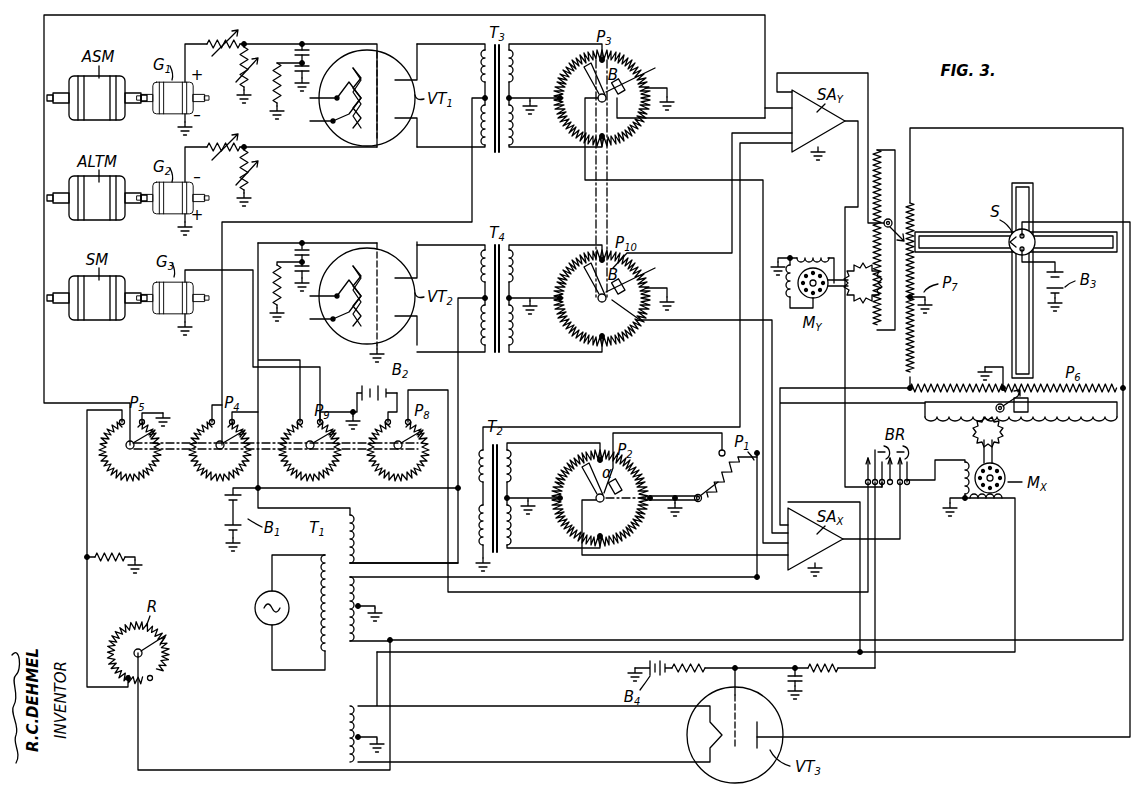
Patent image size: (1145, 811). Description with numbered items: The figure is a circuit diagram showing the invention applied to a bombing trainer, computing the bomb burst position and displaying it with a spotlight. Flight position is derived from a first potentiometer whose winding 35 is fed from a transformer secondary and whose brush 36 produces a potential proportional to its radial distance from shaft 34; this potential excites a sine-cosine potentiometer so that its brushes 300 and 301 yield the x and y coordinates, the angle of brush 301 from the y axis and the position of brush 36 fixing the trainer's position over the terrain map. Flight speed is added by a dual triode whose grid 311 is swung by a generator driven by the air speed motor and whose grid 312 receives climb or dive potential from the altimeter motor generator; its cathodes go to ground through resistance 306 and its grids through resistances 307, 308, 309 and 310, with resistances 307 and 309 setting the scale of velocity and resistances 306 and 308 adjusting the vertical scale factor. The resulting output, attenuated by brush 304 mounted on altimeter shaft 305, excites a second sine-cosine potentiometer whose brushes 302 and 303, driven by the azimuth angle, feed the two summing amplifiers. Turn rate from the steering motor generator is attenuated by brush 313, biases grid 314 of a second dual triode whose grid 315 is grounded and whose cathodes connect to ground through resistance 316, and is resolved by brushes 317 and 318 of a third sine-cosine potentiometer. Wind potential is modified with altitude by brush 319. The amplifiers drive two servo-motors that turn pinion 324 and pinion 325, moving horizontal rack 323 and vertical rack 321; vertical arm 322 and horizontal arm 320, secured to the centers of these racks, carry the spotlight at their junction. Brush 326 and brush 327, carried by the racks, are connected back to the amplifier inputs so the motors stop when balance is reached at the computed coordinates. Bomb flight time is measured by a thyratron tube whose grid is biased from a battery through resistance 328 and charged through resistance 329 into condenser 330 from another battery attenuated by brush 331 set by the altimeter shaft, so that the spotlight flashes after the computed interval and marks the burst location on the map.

The brush 300 is at (580, 477).
The brush 301 is at (597, 502).
The brush 302 is at (580, 77).
The brush 303 is at (656, 80).
The brush 304 is at (223, 460).
The shaft 305 is at (337, 456).
The resistance 306 is at (274, 104).
The resistance 307 is at (238, 70).
The resistance 308 is at (254, 178).
The resistance 309 is at (217, 35).
The resistance 310 is at (209, 144).
The grid 311 is at (382, 56).
The grid 312 is at (383, 142).
The brush 313 is at (323, 450).
The grid 314 is at (382, 260).
The grid 315 is at (354, 335).
The resistance 316 is at (287, 308).
The brush 317 is at (577, 278).
The cosine brush 318 is at (658, 278).
The brush 319 is at (132, 460).
The horizontal arm 320 is at (946, 232).
The vertical rack 321 is at (878, 148).
The vertical arm 322 is at (1030, 356).
The horizontal rack 323 is at (1106, 418).
The pinion 324 is at (1000, 444).
The pinion 325 is at (868, 304).
The brush 326 is at (1024, 414).
The brush 327 is at (890, 238).
The resistance 328 is at (688, 674).
The resistance 329 is at (840, 674).
The condenser 330 is at (813, 688).
The brush 331 is at (410, 450).
The shaft 34 is at (658, 492).
The winding 35 is at (730, 492).
The brush 36 is at (719, 454).